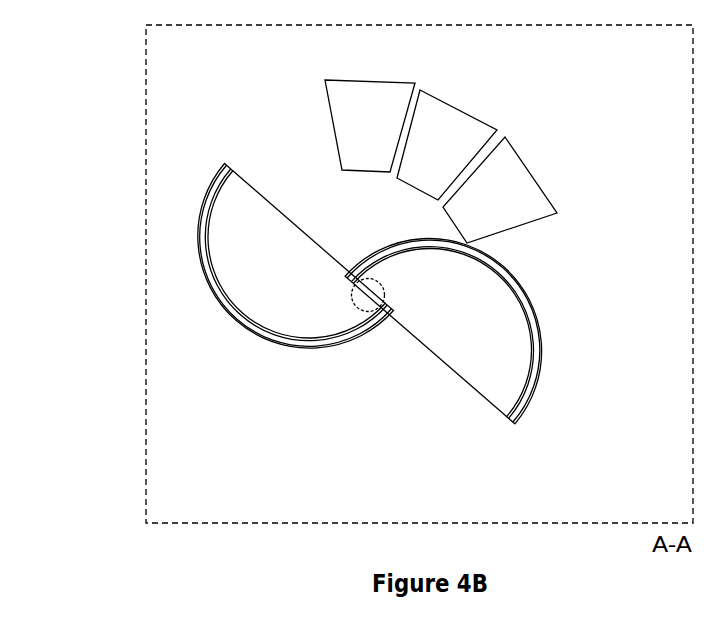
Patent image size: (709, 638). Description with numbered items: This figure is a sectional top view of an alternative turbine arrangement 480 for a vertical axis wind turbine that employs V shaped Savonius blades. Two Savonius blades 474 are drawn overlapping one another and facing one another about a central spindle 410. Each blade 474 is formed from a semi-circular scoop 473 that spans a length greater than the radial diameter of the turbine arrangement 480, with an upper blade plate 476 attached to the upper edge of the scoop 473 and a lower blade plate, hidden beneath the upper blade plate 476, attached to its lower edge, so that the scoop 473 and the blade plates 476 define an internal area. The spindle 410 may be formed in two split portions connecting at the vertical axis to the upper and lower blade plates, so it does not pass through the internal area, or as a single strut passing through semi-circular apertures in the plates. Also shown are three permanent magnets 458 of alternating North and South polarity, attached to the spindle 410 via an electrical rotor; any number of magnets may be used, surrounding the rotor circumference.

The turbine arrangement 480 is at (192, 72).
The Savonius blade 474 is at (353, 241).
The permanent magnet 458 is at (528, 161).
The scoop 473 is at (207, 282).
The upper blade plate 476 is at (295, 273).
The spindle 410 is at (388, 300).